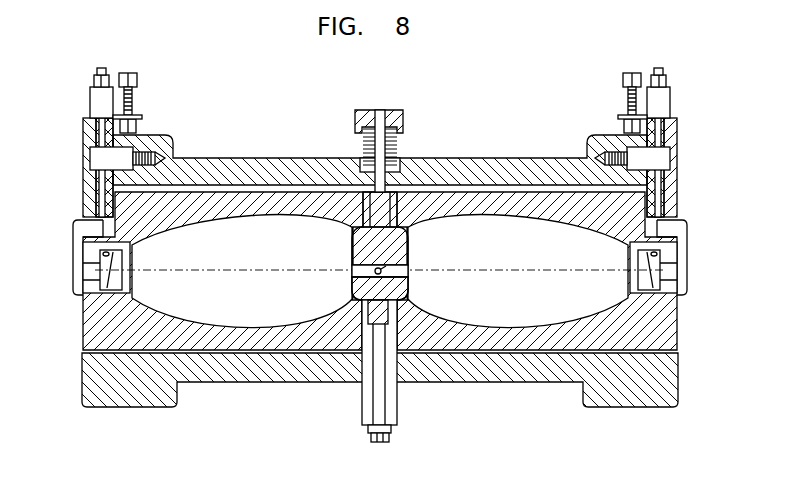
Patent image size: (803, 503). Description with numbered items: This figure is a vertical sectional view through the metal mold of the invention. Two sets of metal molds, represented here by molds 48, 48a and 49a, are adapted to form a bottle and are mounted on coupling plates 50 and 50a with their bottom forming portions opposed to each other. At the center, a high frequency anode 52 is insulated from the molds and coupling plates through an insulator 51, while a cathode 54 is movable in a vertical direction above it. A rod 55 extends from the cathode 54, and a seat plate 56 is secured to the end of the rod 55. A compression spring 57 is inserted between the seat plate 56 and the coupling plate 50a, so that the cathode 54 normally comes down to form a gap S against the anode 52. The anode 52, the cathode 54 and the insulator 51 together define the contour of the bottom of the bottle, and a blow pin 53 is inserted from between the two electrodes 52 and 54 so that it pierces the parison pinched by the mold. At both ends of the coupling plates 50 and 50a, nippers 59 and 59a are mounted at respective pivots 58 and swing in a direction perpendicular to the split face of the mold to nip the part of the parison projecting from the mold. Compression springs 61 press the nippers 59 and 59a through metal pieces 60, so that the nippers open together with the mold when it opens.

The metal mold 48 is at (228, 332).
The metal mold 48a is at (527, 338).
The metal mold 49a is at (492, 212).
The coupling plate 50 is at (282, 375).
The coupling plate 50a is at (258, 160).
The insulator 51 is at (400, 298).
The high frequency anode 52 is at (405, 282).
The blow pin 53 is at (394, 264).
The cathode 54 is at (358, 254).
The rod 55 is at (384, 156).
The seat plate 56 is at (386, 114).
The compression spring 57 is at (364, 147).
The pivot 58 is at (84, 156).
The nipper 59 is at (104, 126).
The nipper 59a is at (113, 143).
The metal piece 60 is at (136, 118).
The compression spring 61 is at (132, 90).
The gap S is at (350, 271).